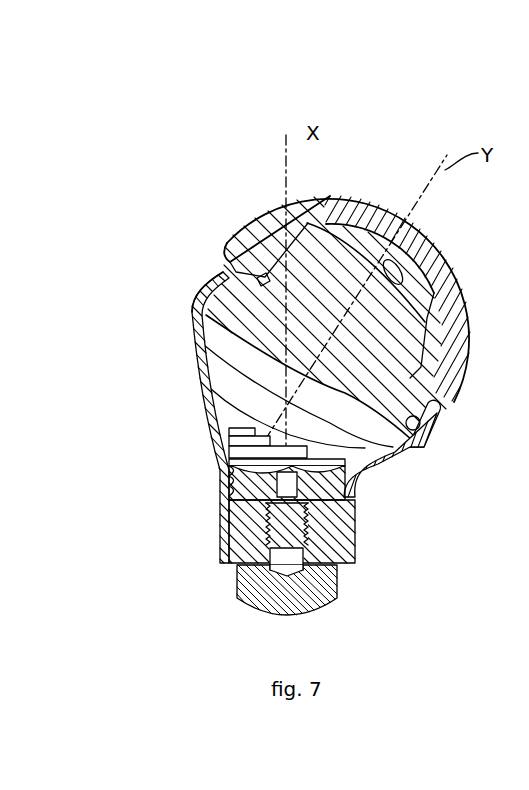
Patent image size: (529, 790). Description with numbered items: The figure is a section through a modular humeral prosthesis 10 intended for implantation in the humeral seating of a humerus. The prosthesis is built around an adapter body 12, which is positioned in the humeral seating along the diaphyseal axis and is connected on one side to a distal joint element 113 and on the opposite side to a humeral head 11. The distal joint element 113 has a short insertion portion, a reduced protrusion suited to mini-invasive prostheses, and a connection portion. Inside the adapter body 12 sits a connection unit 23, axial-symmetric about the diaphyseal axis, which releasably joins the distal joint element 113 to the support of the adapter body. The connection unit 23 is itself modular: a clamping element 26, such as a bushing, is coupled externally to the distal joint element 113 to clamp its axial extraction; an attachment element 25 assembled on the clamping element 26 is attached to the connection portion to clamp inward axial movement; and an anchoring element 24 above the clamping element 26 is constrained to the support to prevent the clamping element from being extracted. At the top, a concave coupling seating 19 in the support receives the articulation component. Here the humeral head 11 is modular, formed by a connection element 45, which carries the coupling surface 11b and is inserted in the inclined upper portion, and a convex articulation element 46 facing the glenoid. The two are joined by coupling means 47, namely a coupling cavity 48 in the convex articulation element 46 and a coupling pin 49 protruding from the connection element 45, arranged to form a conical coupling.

The modular humeral prosthesis 10 is at (142, 138).
The humeral head 11 is at (402, 135).
The coupling surface 11b is at (210, 288).
The adapter body 12 is at (200, 465).
The coupling seating 19 is at (432, 414).
The connection unit 23 is at (223, 592).
The anchoring element 24 is at (225, 482).
The attachment element 25 is at (245, 497).
The clamping element 26 is at (240, 547).
The connection element 45 is at (390, 465).
The convex articulation element 46 is at (247, 220).
The coupling means 47 is at (295, 248).
The coupling cavity 48 is at (427, 257).
The coupling pin 49 is at (423, 333).
The distal joint element 113 is at (343, 592).